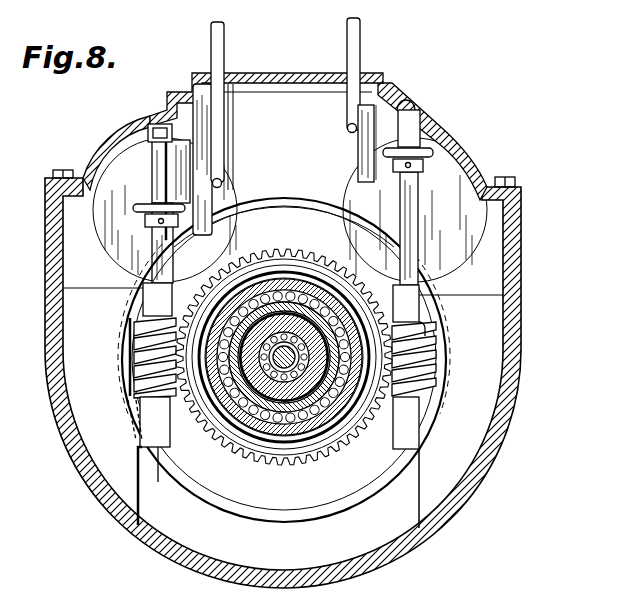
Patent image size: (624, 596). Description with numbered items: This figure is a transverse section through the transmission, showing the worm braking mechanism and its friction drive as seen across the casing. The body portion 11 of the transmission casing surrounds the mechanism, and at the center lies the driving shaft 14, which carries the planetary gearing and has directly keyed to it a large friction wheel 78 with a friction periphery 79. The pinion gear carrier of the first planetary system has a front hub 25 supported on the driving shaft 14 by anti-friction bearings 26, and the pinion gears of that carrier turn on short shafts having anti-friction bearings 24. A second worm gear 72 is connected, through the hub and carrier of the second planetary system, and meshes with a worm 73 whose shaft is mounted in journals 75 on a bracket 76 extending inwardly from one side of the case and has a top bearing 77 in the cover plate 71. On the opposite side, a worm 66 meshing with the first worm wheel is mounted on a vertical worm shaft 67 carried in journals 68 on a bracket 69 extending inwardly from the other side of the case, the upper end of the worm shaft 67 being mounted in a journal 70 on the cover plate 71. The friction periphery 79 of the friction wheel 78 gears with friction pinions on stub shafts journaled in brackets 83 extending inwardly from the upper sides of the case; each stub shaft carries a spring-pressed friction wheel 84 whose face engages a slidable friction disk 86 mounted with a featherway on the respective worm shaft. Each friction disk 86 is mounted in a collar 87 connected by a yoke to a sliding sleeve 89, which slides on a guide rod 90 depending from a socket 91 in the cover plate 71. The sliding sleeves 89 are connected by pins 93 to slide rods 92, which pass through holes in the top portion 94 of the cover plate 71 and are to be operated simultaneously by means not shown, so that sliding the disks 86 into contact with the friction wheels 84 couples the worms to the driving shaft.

The body portion 11 is at (113, 527).
The driving shaft 14 is at (276, 345).
The anti-friction bearings 24 is at (119, 430).
The front hub 25 is at (298, 410).
The anti-friction bearings 26 is at (268, 402).
The worm 66 is at (436, 388).
The worm shaft 67 is at (418, 272).
The journals 68 is at (421, 432).
The bracket 69 is at (486, 363).
The journal 70 is at (158, 127).
The cover plate 71 is at (408, 106).
The second worm gear 72 is at (218, 428).
The worm 73 is at (134, 386).
The journals 75 is at (158, 452).
The bracket 76 is at (80, 373).
The top bearing 77 is at (150, 131).
The friction wheel 78 is at (297, 199).
The friction periphery 79 is at (264, 189).
The brackets 83 is at (78, 200).
The friction wheel 84 is at (455, 172).
The friction disks 86 is at (150, 206).
The collar 87 is at (150, 223).
The sliding sleeve 89 is at (203, 221).
The guide rod 90 is at (157, 162).
The sockets 91 is at (193, 86).
The slide rods 92 is at (224, 56).
The pins 93 is at (221, 180).
The top portion 94 is at (300, 73).